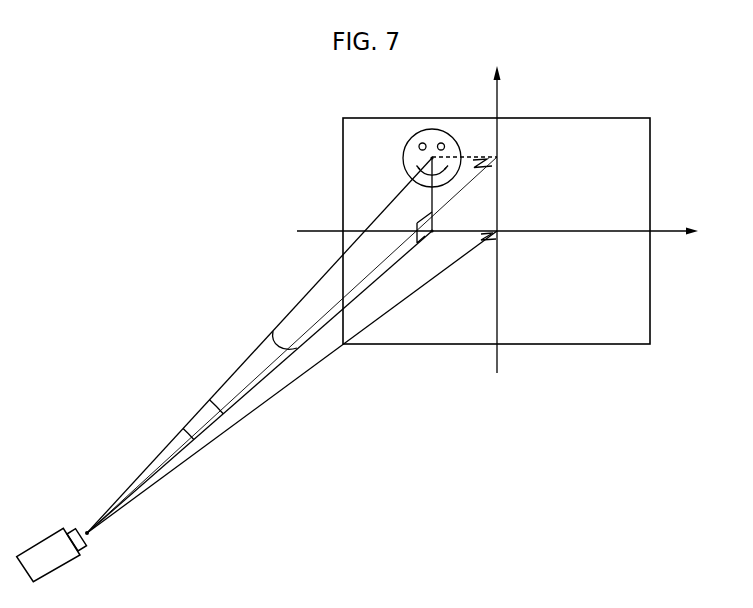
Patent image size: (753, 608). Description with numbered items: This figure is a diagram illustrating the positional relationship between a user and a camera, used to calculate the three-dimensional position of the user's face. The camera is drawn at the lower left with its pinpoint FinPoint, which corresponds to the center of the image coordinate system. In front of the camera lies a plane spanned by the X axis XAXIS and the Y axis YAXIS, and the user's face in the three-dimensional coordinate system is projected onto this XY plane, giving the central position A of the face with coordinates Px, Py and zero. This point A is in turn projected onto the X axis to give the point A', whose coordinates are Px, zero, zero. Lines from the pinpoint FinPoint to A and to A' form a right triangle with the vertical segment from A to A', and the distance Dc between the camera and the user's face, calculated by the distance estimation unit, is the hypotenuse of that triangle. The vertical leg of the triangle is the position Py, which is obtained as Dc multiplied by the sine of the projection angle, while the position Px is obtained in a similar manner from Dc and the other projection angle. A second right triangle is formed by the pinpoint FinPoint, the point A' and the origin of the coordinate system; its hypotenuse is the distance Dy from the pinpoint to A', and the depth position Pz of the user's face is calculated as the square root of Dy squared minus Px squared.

The central position of the user's face projected onto the XY plane A is at (422, 132).
The projection of point A onto the X axis A' is at (507, 257).
The position of the user's face parallel to the x axis Px is at (497, 157).
The position of the user's face parallel to the y axis Py is at (434, 172).
The position of the user's face parallel to the z axis Pz is at (300, 376).
The distance between the camera and the user's face Dc is at (245, 361).
The distance from the pinpoint of the camera to A' Dy is at (273, 331).
The pinpoint of the camera FinPoint is at (87, 554).
The X axis XAXIS is at (506, 235).
The Y axis YAXIS is at (520, 217).